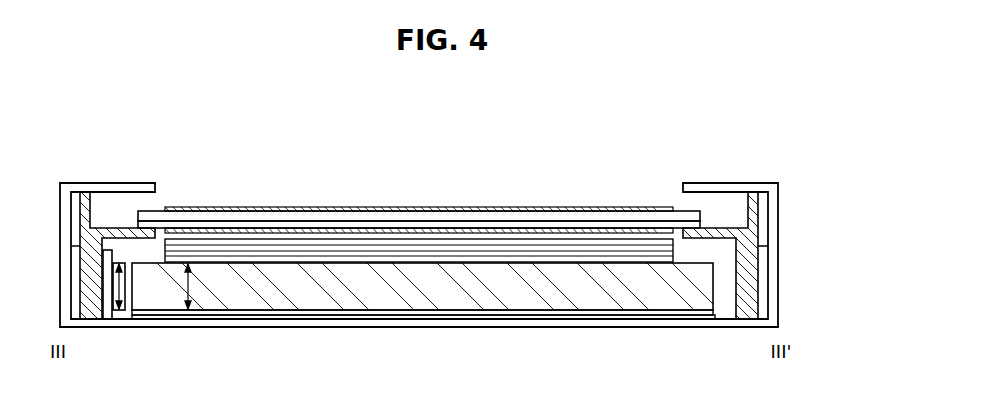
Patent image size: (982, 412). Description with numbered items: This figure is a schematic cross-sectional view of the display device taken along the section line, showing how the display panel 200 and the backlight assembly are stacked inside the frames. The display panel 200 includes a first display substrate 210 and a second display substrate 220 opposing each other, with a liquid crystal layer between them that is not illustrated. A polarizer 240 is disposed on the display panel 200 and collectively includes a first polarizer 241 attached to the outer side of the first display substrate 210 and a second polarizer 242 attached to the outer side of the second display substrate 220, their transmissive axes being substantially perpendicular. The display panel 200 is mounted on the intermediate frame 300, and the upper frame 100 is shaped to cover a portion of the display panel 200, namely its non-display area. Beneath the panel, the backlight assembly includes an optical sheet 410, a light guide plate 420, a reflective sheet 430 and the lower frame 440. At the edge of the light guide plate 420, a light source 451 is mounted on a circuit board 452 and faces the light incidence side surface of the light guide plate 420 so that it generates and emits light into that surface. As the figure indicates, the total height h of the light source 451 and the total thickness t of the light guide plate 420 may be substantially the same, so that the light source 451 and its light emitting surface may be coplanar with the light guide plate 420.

The upper frame 100 is at (730, 190).
The display panel 200 is at (419, 164).
The first display substrate 210 is at (463, 137).
The second display substrate 220 is at (457, 215).
The polarizer 240 is at (419, 166).
The first polarizer 241 is at (283, 137).
The second polarizer 242 is at (278, 210).
The intermediate frame 300 is at (749, 278).
The optical sheet 410 is at (572, 241).
The light guide plate 420 is at (449, 292).
The reflective sheet 430 is at (395, 313).
The lower frame 440 is at (333, 323).
The light source 451 is at (115, 308).
The circuit board 452 is at (104, 302).
The total height of the light source h is at (125, 286).
The total thickness of the light guide plate t is at (186, 286).